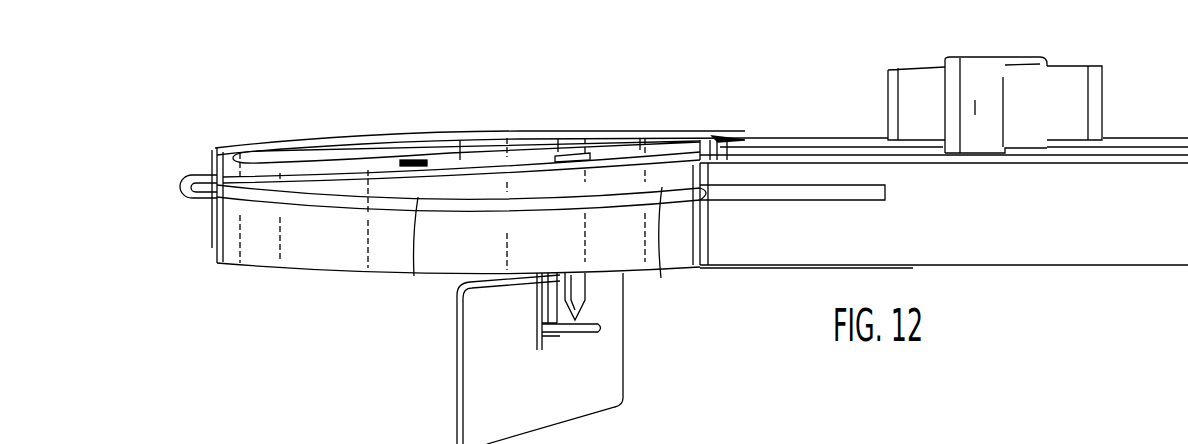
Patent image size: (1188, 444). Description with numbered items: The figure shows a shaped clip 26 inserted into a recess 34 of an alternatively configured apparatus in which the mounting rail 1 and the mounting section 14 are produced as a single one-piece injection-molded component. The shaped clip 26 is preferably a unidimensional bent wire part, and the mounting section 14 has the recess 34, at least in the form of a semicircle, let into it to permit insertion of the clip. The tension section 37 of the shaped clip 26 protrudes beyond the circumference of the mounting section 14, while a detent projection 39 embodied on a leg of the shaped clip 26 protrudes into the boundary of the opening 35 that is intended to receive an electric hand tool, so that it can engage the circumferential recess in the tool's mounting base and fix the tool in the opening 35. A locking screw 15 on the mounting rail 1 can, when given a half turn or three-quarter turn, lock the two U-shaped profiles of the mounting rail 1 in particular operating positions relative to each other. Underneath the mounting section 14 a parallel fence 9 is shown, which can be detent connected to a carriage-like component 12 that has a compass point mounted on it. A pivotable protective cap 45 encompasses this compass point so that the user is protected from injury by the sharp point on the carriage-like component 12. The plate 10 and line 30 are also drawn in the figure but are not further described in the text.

The mounting rail 1 is at (1062, 277).
The parallel fence 9 is at (445, 335).
The plate 10 is at (458, 418).
The carriage-like component 12 is at (540, 320).
The mounting section 14 is at (338, 118).
The locking screw 15 is at (1105, 93).
The shaped clip 26 is at (190, 207).
The slit 30 is at (414, 277).
The recess 34 is at (797, 190).
The opening 35 is at (496, 157).
The tension section 37 is at (192, 176).
The detent projection 39 is at (663, 276).
The protective cap 45 is at (576, 334).